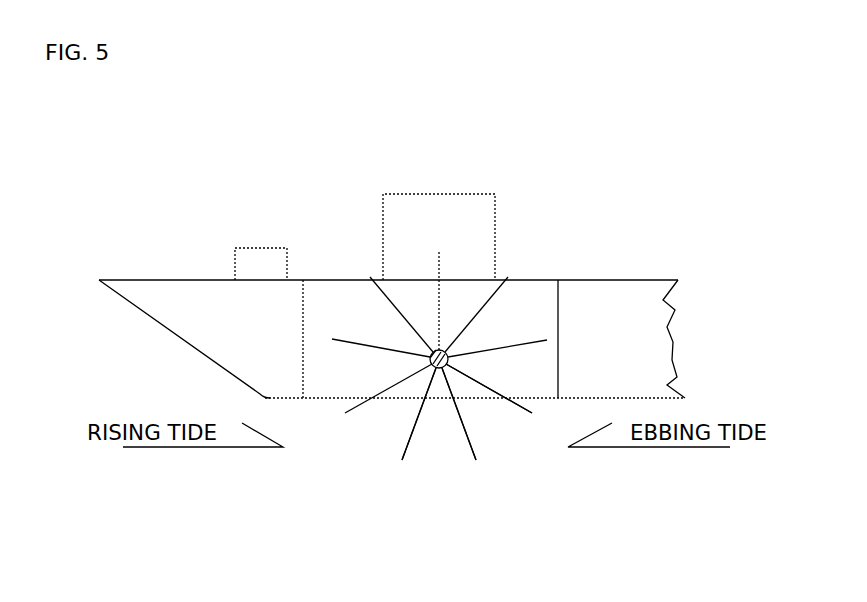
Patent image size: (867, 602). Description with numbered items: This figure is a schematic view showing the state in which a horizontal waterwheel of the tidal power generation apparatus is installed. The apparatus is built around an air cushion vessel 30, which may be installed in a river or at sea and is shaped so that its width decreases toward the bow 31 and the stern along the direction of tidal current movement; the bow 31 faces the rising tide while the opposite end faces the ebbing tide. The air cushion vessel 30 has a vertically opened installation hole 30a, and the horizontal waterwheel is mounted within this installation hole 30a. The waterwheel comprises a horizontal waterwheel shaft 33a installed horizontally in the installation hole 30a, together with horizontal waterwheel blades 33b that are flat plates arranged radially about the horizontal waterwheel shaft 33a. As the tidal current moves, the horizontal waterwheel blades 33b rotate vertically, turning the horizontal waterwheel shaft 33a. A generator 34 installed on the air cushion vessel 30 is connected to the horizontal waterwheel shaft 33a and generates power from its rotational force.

The air cushion vessel 30 is at (555, 232).
The installation hole 30a is at (560, 317).
The bow 31 is at (176, 300).
The horizontal waterwheel shaft 33a is at (438, 370).
The horizontal waterwheel blades 33b is at (517, 403).
The generator 34 is at (450, 210).